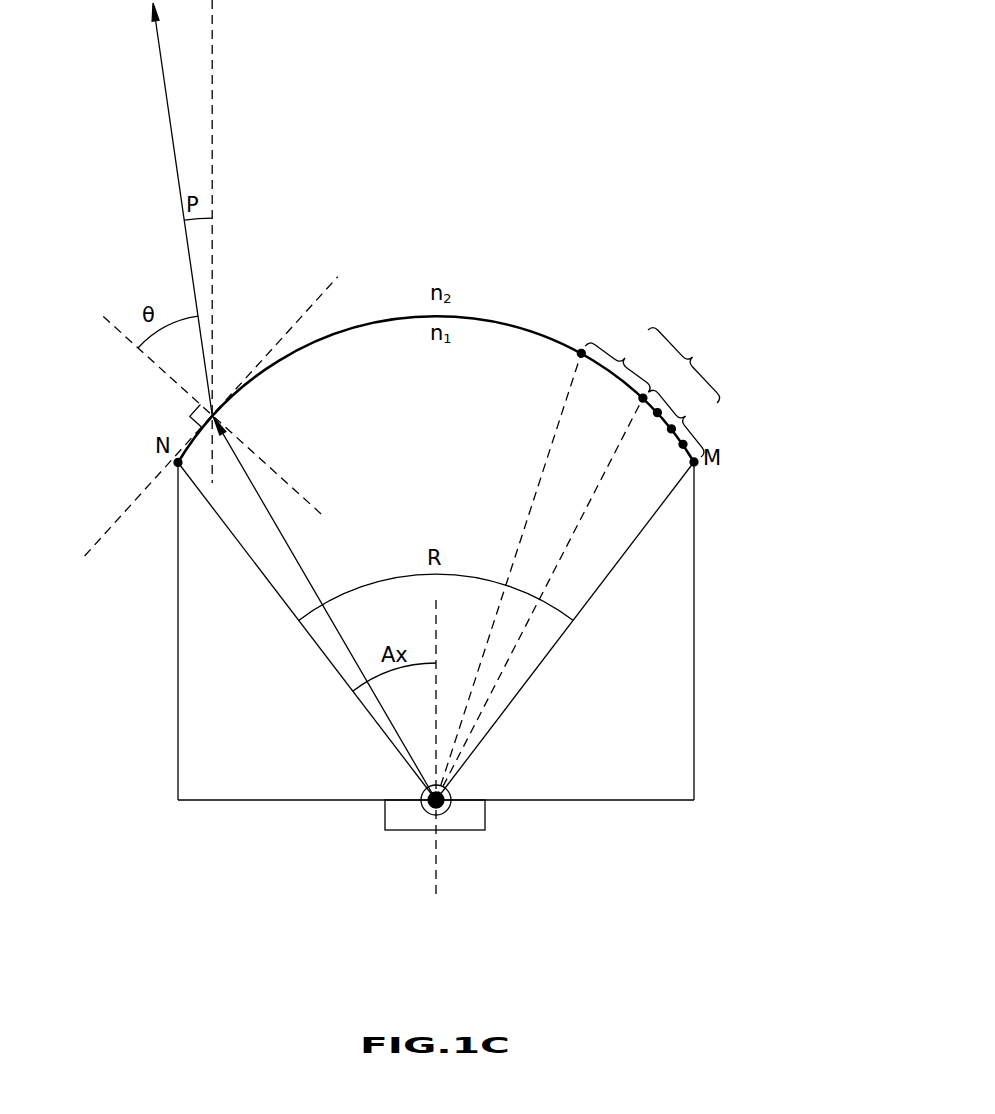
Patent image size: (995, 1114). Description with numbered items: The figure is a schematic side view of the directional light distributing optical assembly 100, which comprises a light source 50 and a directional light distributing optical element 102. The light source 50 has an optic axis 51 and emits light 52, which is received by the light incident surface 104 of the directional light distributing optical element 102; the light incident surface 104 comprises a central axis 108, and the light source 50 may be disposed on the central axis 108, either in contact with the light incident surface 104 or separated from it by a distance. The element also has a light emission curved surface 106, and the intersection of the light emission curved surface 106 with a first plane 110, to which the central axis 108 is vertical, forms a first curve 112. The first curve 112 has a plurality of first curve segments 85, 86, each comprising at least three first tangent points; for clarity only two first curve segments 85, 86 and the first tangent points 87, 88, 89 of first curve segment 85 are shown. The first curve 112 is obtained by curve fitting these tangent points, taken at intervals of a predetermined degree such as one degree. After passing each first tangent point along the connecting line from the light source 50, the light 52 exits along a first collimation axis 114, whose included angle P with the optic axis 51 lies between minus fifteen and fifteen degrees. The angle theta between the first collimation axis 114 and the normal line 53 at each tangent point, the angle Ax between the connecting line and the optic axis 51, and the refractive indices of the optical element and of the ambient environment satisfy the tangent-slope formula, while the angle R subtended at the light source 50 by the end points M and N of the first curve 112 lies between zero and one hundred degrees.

The directional light distributing optical assembly 100 is at (723, 232).
The directional light distributing optical element 102 is at (715, 482).
The light incident surface 104 is at (573, 803).
The light emission curved surface 106 is at (518, 318).
The central axis 108 is at (447, 808).
The first plane 110 is at (620, 678).
The first curve 112 is at (692, 365).
The first curve segment 85 is at (573, 595).
The first curve segment 86 is at (544, 568).
The first tangent point 87 is at (680, 447).
The first tangent point 88 is at (668, 432).
The first tangent point 89 is at (656, 414).
The light source 50 is at (398, 818).
The optic axis 51 is at (430, 855).
The light 52 is at (297, 558).
The normal line 53 is at (272, 466).
The first collimation axis 114 is at (174, 164).